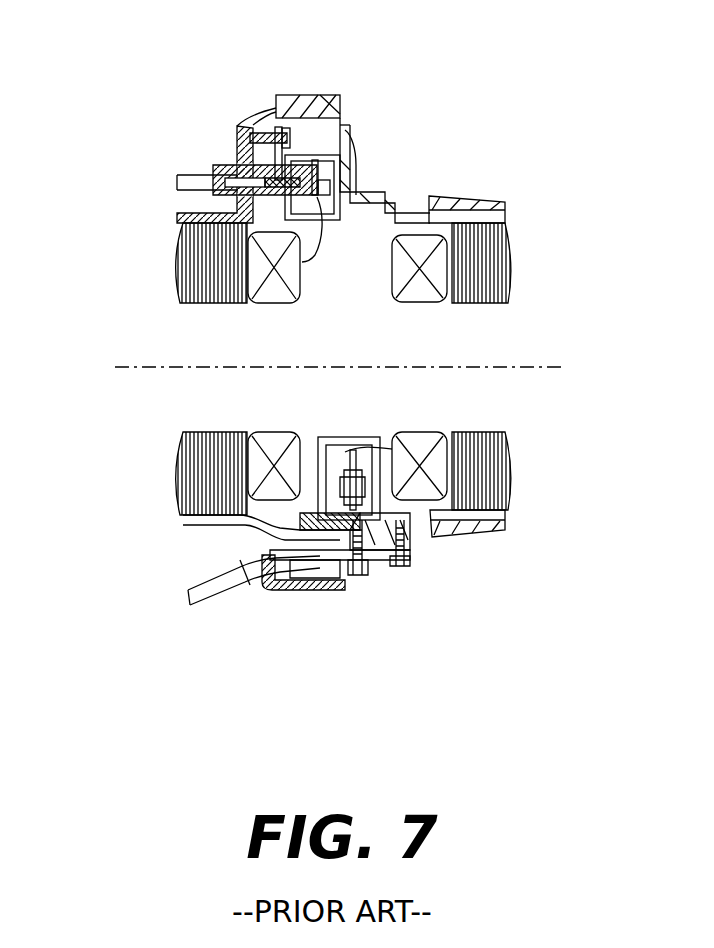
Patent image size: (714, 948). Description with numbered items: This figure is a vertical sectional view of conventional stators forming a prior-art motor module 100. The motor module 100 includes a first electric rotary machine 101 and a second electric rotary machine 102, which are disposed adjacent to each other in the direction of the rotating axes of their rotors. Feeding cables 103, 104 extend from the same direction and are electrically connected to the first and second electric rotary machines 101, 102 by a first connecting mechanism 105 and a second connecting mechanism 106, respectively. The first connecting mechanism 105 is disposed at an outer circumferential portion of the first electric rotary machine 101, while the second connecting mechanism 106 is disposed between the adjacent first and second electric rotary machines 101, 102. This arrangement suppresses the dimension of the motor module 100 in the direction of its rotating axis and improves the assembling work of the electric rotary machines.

The motor module 100 is at (471, 99).
The first electric rotary machine 101 is at (161, 257).
The second electric rotary machine 102 is at (519, 250).
The feeding cable 103 is at (190, 170).
The feeding cable 104 is at (200, 605).
The first connecting mechanism 105 is at (310, 150).
The second connecting mechanism 106 is at (344, 430).